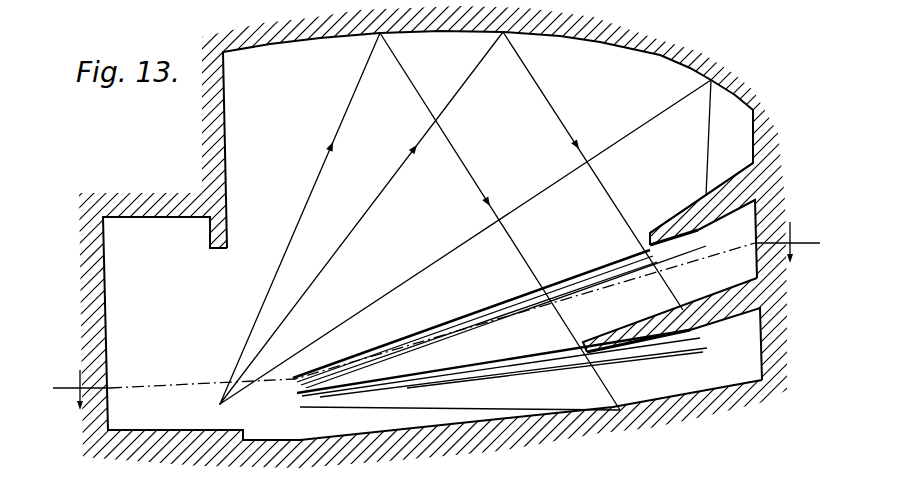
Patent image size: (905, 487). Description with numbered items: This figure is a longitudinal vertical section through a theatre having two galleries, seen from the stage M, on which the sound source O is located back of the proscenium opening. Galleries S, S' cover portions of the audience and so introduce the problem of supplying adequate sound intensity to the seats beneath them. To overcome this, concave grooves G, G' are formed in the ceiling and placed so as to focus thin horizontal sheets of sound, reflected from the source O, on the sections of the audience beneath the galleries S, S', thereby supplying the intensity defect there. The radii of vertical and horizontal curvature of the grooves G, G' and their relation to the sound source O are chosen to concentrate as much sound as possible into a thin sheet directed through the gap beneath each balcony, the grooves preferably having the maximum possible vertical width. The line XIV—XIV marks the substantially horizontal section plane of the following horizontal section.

The stage M is at (172, 428).
The sound source O is at (456, 224).
The concave groove G is at (499, 317).
The concave groove G' is at (502, 363).
The gallery S is at (701, 204).
The gallery S' is at (642, 310).
The section line XIV— XIV is at (432, 316).